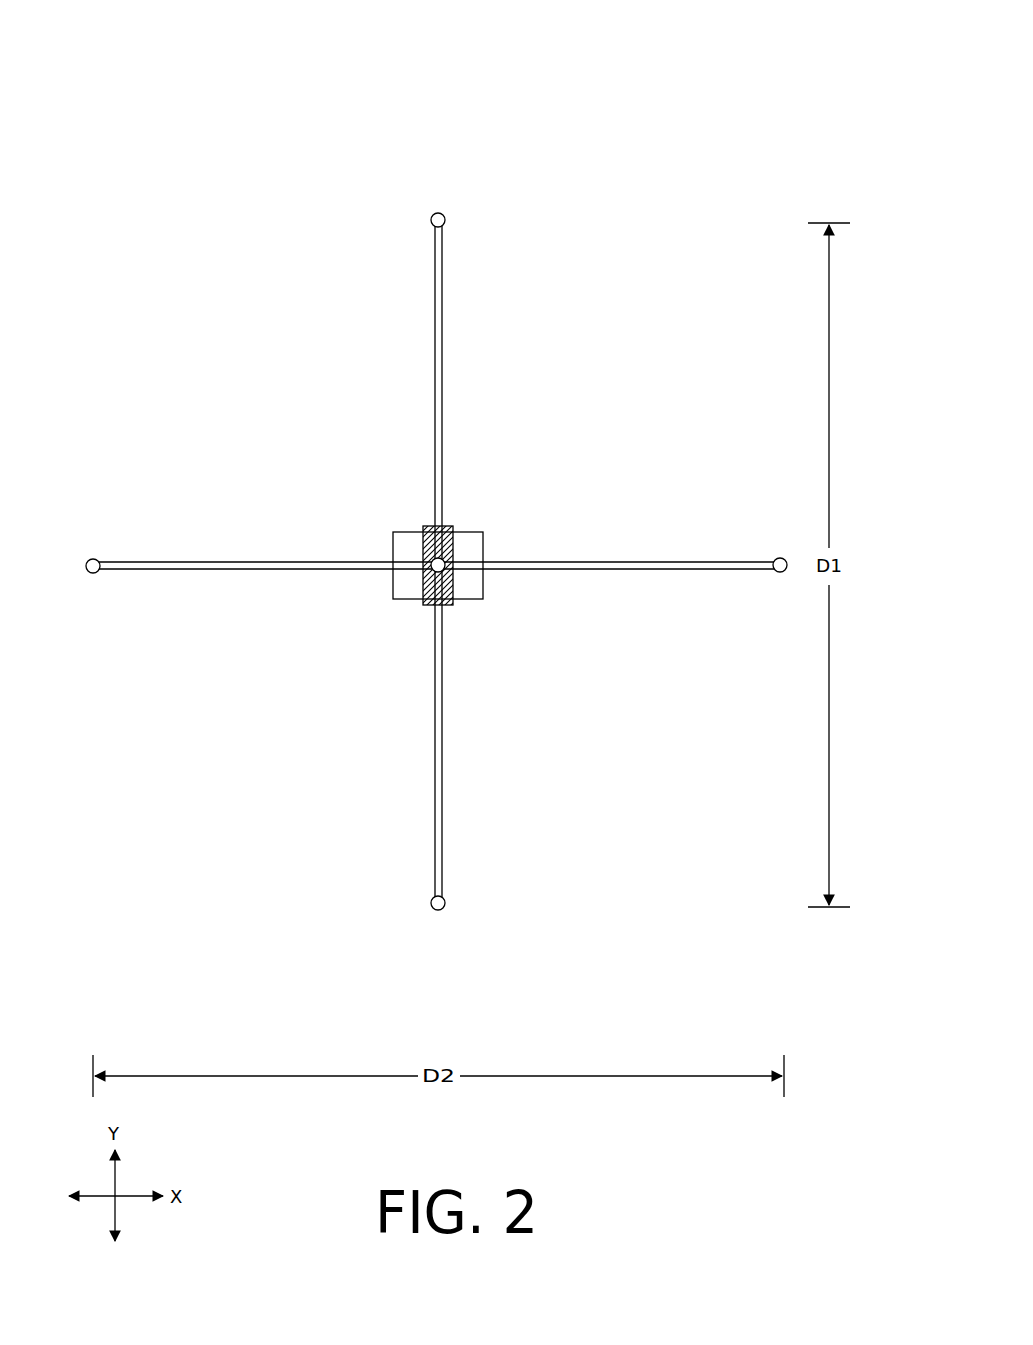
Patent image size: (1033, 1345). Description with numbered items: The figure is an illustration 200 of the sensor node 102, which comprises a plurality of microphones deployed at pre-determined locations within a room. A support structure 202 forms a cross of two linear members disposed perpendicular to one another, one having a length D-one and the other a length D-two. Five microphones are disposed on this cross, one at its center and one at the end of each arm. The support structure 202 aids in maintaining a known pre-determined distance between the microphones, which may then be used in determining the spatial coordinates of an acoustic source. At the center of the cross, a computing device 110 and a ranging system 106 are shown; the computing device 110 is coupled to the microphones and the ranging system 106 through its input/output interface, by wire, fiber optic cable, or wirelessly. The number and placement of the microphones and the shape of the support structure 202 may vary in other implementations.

The illustration 200 is at (746, 32).
The sensor node 102 is at (194, 96).
The ranging system 106 is at (428, 603).
The computing device 110 is at (466, 589).
The support structure 202 is at (440, 400).